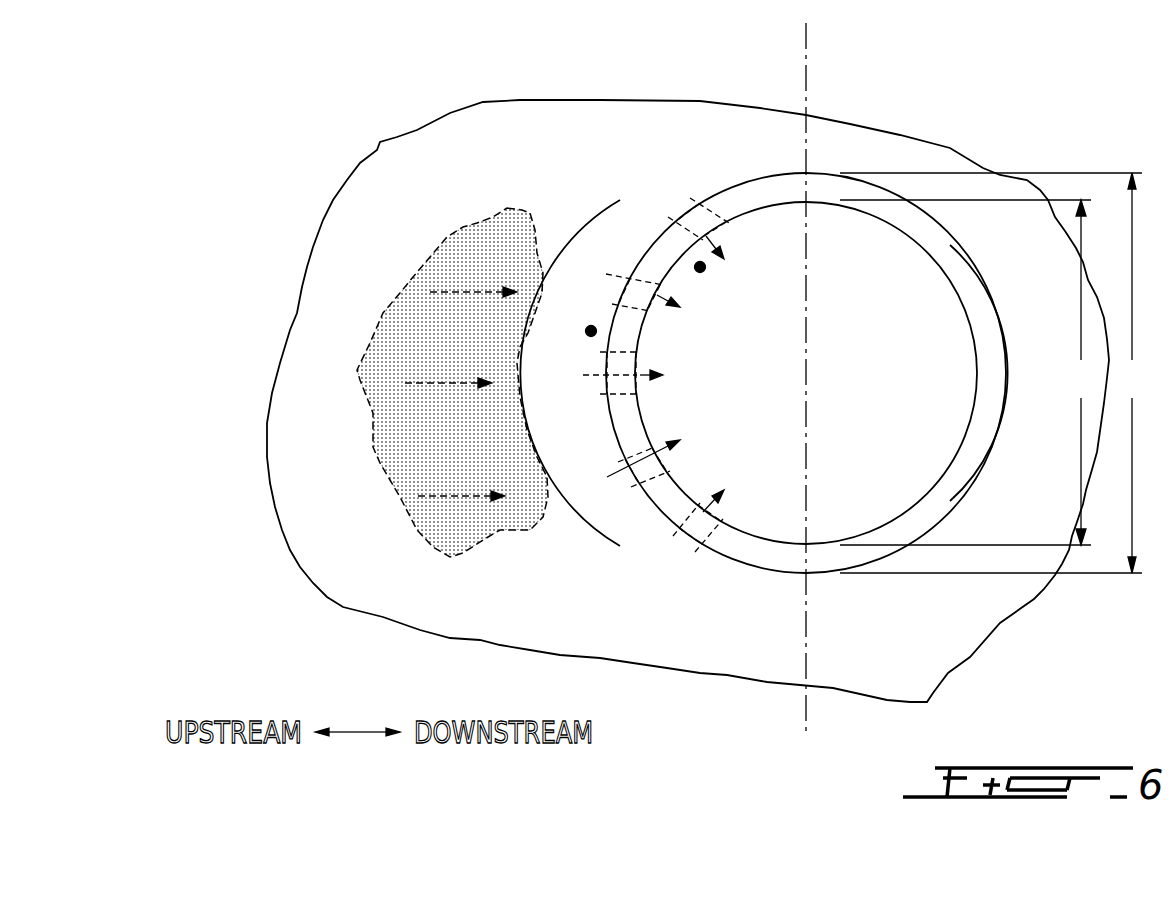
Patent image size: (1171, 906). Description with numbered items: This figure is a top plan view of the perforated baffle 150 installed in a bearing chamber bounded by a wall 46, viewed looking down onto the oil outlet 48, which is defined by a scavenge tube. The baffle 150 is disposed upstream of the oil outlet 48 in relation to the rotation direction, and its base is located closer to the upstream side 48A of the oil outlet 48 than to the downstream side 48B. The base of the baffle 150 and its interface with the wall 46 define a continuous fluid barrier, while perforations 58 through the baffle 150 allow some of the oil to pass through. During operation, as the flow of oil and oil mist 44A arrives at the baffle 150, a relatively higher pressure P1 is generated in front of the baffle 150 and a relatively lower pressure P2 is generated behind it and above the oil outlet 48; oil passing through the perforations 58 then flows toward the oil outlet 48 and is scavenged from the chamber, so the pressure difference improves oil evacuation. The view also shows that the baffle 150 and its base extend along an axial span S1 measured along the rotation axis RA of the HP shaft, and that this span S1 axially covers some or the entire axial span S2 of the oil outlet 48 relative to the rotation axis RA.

The oil mist 44A is at (443, 335).
The wall 46 is at (323, 522).
The oil outlet 48 is at (880, 304).
The upstream side of oil outlet 48A is at (642, 388).
The downstream side of oil outlet 48B is at (969, 368).
The perforations 58 is at (643, 266).
The perforated baffle 150 is at (667, 495).
The higher pressure P1 is at (591, 326).
The lower pressure P2 is at (700, 262).
The rotation axis RA is at (808, 65).
The axial span of baffle S1 is at (996, 373).
The axial span of oil outlet S2 is at (970, 372).